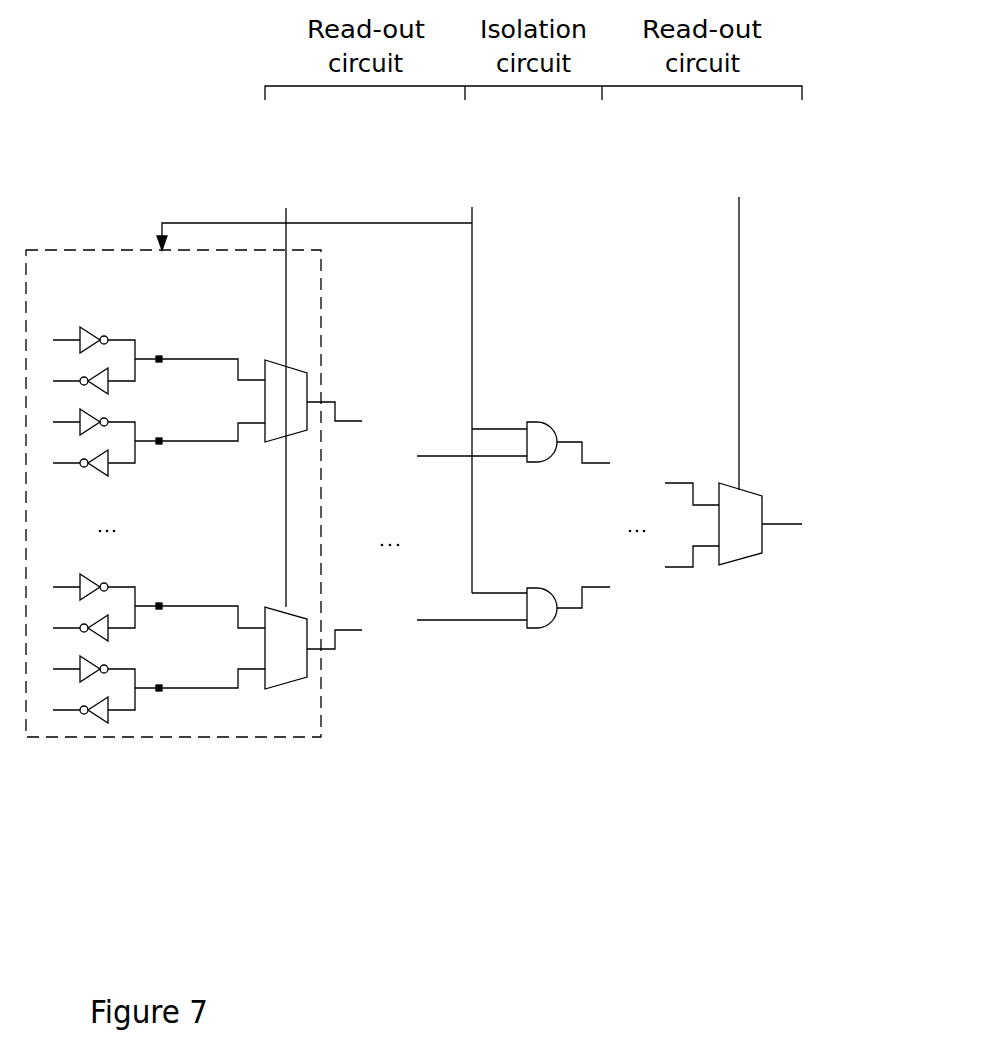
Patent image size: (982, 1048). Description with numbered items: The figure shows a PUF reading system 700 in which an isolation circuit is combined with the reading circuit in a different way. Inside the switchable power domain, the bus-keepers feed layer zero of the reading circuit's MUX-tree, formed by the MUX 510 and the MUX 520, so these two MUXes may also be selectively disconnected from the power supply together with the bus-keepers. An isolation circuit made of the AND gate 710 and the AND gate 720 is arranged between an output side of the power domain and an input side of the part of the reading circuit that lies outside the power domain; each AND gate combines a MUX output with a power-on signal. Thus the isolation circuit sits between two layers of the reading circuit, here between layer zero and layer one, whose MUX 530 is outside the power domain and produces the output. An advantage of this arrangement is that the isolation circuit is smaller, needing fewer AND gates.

The PUF reading system 700 is at (448, 452).
The MUX 510 is at (289, 367).
The MUX 520 is at (286, 665).
The MUX 530 is at (748, 507).
The AND gate 710 is at (537, 420).
The AND gate 720 is at (537, 629).